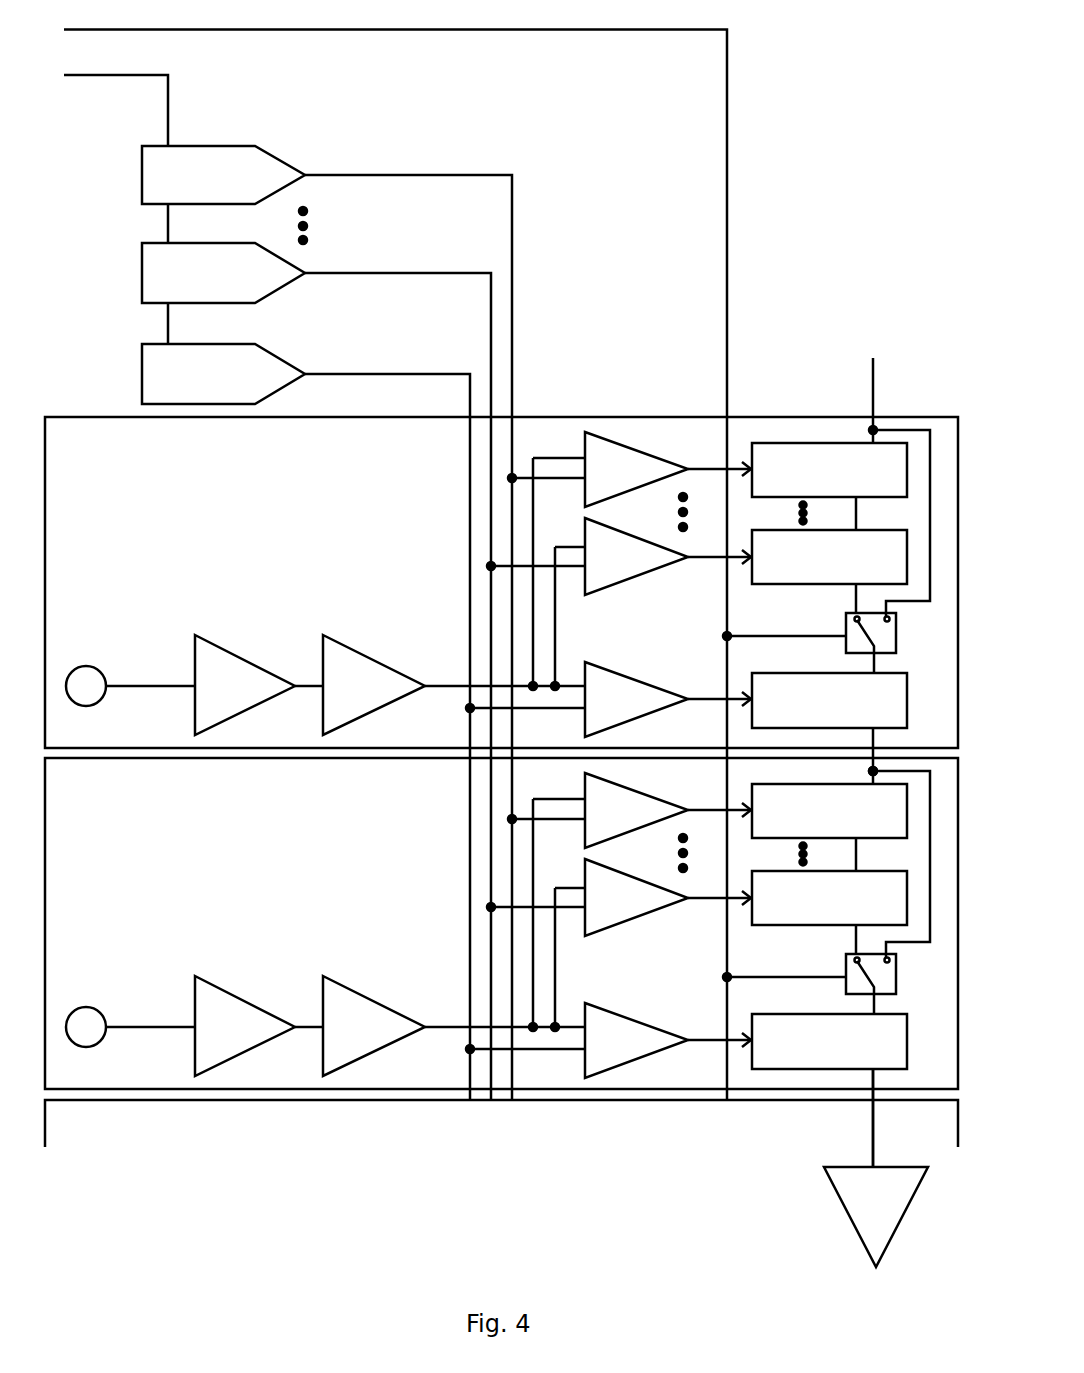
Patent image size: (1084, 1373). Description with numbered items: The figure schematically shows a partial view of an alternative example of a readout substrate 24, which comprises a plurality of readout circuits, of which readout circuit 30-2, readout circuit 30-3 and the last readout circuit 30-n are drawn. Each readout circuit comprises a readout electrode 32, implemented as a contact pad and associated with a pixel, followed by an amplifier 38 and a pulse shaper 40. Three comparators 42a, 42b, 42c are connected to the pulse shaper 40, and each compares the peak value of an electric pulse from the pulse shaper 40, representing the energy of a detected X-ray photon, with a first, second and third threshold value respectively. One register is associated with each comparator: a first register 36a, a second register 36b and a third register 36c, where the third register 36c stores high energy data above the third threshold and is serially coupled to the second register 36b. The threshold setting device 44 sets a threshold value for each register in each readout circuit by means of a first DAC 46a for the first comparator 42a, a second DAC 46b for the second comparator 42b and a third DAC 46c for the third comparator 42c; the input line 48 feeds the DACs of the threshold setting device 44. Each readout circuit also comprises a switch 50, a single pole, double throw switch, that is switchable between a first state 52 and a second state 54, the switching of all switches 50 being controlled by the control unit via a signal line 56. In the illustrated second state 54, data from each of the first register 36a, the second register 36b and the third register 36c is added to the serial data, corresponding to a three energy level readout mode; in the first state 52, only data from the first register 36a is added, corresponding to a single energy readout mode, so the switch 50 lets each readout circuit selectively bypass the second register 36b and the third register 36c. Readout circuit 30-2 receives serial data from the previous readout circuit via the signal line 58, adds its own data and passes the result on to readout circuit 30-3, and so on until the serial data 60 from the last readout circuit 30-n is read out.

The readout substrate 24 is at (827, 189).
The readout circuit 30-2 is at (129, 467).
The readout circuit 30-3 is at (129, 808).
The last readout circuit 30-n is at (129, 1146).
The readout electrode 32 is at (88, 685).
The first register 36a is at (853, 714).
The second register 36b is at (853, 571).
The third register 36c is at (852, 484).
The amplifier 38 is at (243, 701).
The pulse shaper 40 is at (374, 701).
The first comparator 42a is at (642, 714).
The second comparator 42b is at (642, 572).
The third comparator 42c is at (641, 484).
The threshold setting device 44 is at (344, 131).
The first DAC 46a is at (229, 386).
The second DAC 46b is at (229, 286).
The third DAC 46c is at (228, 187).
The reference signal input 48 is at (116, 195).
The switch 50 is at (849, 645).
The first state 52 is at (899, 624).
The second state 54 is at (853, 618).
The signal line 56 is at (395, 550).
The signal line 58 is at (895, 400).
The serial data 60 is at (892, 1212).